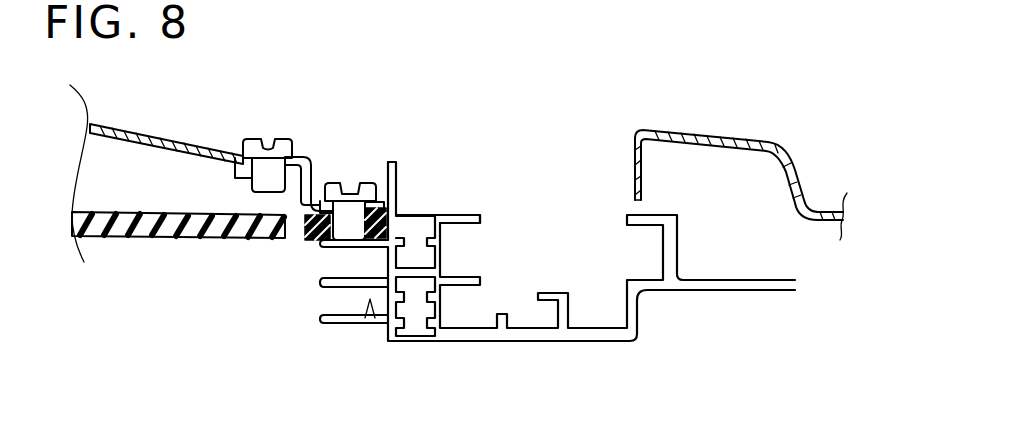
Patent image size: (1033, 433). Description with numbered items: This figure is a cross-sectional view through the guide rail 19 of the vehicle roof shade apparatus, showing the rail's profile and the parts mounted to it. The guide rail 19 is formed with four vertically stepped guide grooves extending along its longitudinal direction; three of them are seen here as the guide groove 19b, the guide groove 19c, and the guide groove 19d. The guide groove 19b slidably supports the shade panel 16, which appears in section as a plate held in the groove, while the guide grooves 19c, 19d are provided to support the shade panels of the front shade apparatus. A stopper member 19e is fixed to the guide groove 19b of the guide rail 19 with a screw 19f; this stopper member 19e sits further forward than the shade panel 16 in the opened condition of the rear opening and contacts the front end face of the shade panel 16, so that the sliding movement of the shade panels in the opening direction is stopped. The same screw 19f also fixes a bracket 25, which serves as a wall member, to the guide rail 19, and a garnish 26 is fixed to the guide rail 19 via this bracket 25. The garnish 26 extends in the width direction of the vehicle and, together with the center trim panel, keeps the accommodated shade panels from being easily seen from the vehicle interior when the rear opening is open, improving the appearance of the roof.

The shade panel 16 is at (138, 238).
The guide rail 19 is at (542, 268).
The guide groove 19b is at (435, 216).
The guide groove 19c is at (334, 277).
The guide groove 19d is at (375, 318).
The stopper member 19e is at (312, 216).
The screw 19f is at (337, 182).
The bracket 25 is at (317, 190).
The garnish 26 is at (136, 126).